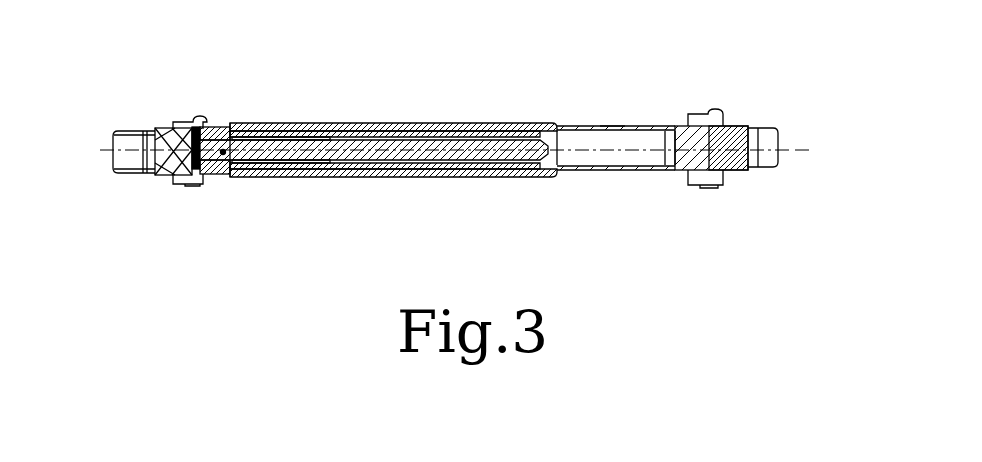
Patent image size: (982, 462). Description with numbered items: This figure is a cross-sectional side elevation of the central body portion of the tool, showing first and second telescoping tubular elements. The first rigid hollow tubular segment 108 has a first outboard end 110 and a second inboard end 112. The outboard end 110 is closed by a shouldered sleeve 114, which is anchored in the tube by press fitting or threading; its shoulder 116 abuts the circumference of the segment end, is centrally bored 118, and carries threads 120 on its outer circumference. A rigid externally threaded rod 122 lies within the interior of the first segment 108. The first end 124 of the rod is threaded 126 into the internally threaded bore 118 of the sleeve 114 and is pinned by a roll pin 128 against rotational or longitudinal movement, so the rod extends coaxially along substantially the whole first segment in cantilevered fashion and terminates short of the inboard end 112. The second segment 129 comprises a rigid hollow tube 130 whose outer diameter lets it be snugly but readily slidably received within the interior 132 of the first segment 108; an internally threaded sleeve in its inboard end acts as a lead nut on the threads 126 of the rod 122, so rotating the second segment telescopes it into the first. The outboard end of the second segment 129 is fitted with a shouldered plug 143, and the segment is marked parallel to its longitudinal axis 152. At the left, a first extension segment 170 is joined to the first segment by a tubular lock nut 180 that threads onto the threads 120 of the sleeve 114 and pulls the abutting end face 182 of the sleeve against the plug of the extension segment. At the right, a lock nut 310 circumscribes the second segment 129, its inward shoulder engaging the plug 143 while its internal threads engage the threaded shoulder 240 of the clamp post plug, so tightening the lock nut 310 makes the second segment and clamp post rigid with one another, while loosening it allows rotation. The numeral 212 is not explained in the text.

The first rigid hollow tubular segment 108 is at (398, 123).
The first (outboard) end 110 is at (220, 122).
The second (inboard) end 112 is at (549, 123).
The shouldered sleeve 114 is at (235, 178).
The shoulder 116 is at (194, 120).
The bore 118 is at (132, 173).
The threads 120 is at (212, 127).
The externally threaded rod 122 is at (325, 128).
The first end of the rod 124 is at (198, 185).
The external threads 126 is at (280, 123).
The roll pin 128 is at (283, 178).
The second segment 129 is at (613, 106).
The rigid hollow tube 130 is at (635, 123).
The interior 132 is at (330, 177).
The shouldered plug 143 is at (690, 176).
The longitudinal axis 152 is at (806, 152).
The first extension segment 170 is at (122, 128).
The tubular lock nut 180 is at (183, 120).
The end face 182 is at (172, 185).
The fitting wall 212 is at (147, 127).
The shoulder 240 is at (738, 170).
The lock nut 310 is at (700, 113).